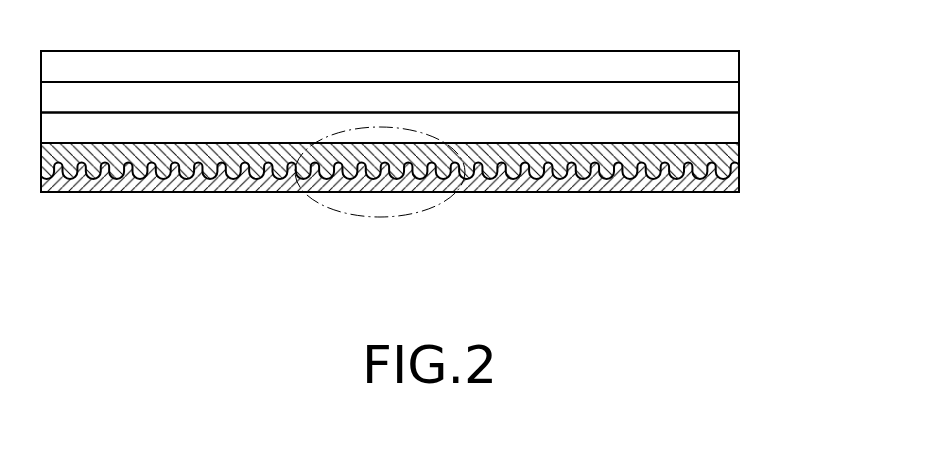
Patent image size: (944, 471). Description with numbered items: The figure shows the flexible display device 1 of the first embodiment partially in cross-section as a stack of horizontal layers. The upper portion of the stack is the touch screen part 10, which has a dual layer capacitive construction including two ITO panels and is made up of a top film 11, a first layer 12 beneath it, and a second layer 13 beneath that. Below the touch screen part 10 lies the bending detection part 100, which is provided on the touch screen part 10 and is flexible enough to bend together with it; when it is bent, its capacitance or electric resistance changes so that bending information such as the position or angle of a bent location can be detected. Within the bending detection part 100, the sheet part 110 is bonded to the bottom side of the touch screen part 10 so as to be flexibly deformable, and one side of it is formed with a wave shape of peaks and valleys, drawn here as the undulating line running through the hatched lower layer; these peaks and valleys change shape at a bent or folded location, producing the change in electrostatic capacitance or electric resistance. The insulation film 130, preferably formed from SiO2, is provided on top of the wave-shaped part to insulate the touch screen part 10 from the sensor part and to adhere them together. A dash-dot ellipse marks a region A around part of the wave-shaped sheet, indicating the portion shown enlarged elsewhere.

The flexible display device 1 is at (365, 28).
The touch screen part 10 is at (808, 60).
The top film 11 is at (735, 64).
The first layer 12 is at (735, 96).
The second layer 13 is at (735, 127).
The bending detection part 100 is at (740, 192).
The sheet part 110 is at (697, 181).
The insulation film 130 is at (737, 158).
The enlarged region A is at (435, 212).